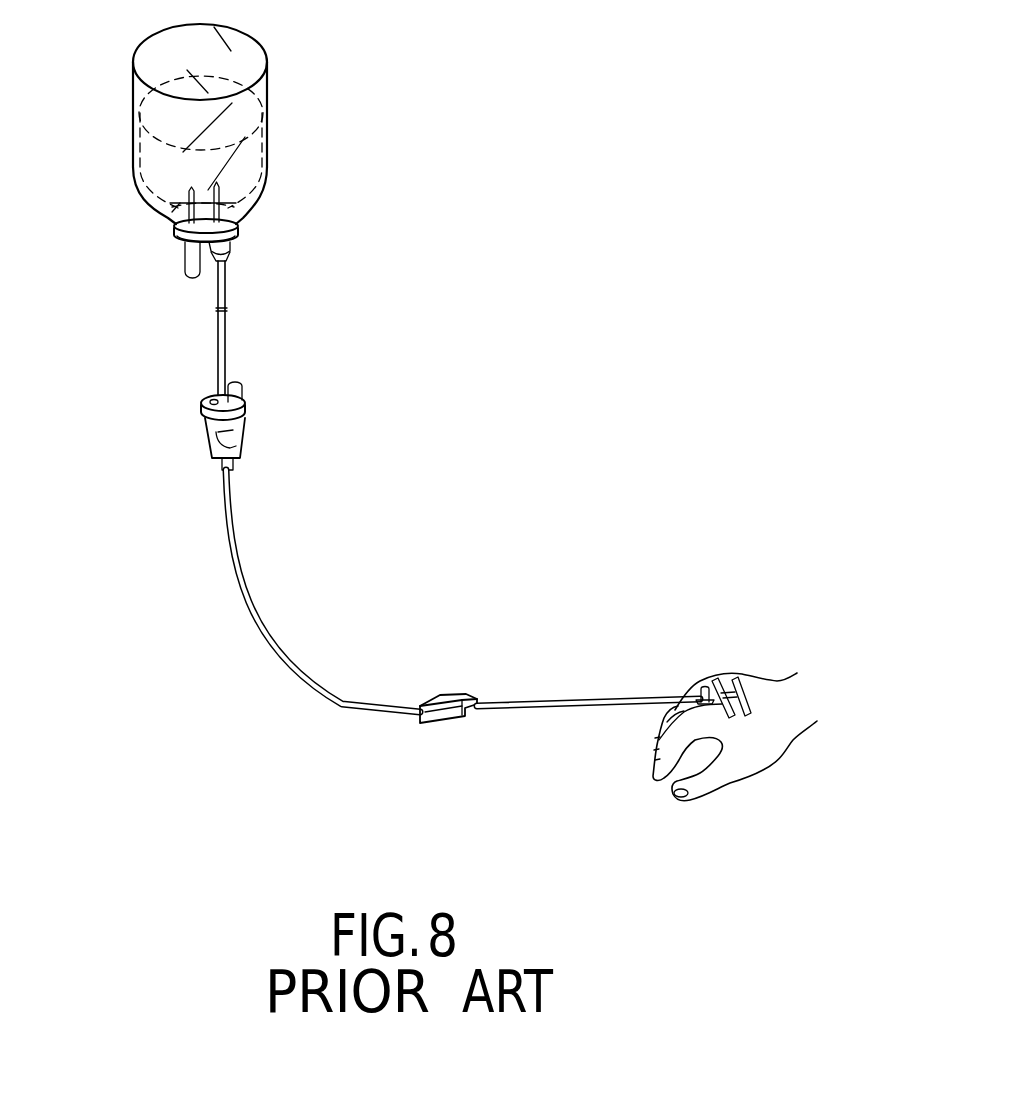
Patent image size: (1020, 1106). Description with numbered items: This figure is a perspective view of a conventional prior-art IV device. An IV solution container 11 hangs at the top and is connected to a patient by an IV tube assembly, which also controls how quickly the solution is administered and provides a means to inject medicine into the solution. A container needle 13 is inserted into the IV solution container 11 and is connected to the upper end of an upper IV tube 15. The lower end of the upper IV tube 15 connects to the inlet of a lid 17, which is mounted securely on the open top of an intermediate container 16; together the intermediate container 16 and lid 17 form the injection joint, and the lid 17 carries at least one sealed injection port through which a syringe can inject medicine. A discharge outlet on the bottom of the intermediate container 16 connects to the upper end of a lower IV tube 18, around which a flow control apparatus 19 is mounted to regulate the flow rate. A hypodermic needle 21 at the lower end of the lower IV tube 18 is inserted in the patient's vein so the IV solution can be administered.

The IV solution container 11 is at (268, 88).
The container needle 13 is at (240, 221).
The upper IV tube 15 is at (223, 345).
The intermediate container 16 is at (246, 436).
The lid 17 is at (247, 405).
The lower IV tube 18 is at (342, 699).
The flow control apparatus 19 is at (458, 697).
The hypodermic needle 21 is at (708, 688).